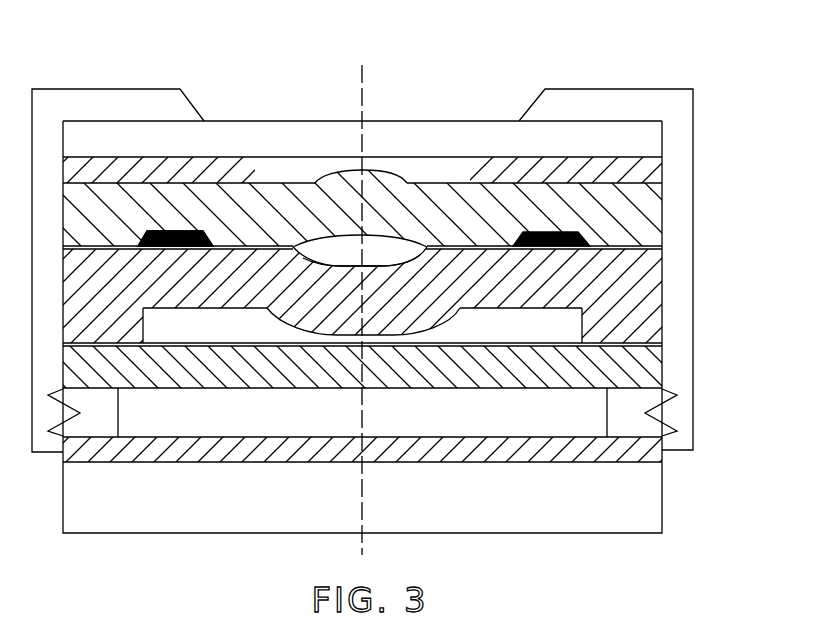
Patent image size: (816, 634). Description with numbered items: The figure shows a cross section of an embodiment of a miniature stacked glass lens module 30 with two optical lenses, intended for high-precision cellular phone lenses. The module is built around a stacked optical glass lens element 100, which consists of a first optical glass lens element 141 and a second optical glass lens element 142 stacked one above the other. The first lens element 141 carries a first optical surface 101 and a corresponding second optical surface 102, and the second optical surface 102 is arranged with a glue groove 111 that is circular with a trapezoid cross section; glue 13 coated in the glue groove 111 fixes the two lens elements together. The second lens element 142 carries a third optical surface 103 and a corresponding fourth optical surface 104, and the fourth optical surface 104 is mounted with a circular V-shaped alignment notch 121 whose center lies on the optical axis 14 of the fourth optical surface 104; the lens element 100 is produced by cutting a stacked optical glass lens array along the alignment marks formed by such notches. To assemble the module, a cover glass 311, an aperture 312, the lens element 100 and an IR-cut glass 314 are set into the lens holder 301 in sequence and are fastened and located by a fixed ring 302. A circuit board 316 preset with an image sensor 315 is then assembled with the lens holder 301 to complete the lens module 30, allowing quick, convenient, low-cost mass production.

The miniature stacked glass lens module 30 is at (648, 83).
The lens holder 301 is at (660, 106).
The cover glass 311 is at (655, 141).
The aperture 312 is at (655, 172).
The first optical glass lens element 141 is at (640, 222).
The second optical glass lens element 142 is at (640, 272).
The stacked optical glass lens element 100 is at (734, 197).
The first optical surface 101 is at (400, 183).
The second optical surface 102 is at (382, 235).
The third optical surface 103 is at (343, 265).
The fourth optical surface 104 is at (343, 336).
The glue 13 is at (162, 230).
The glue groove 111 is at (183, 230).
The alignment notch 121 is at (652, 344).
The IR-cut glass 314 is at (652, 374).
The fixed ring 302 is at (643, 410).
The image sensor 315 is at (642, 454).
The circuit board 316 is at (655, 492).
The optical axis 14 is at (360, 298).